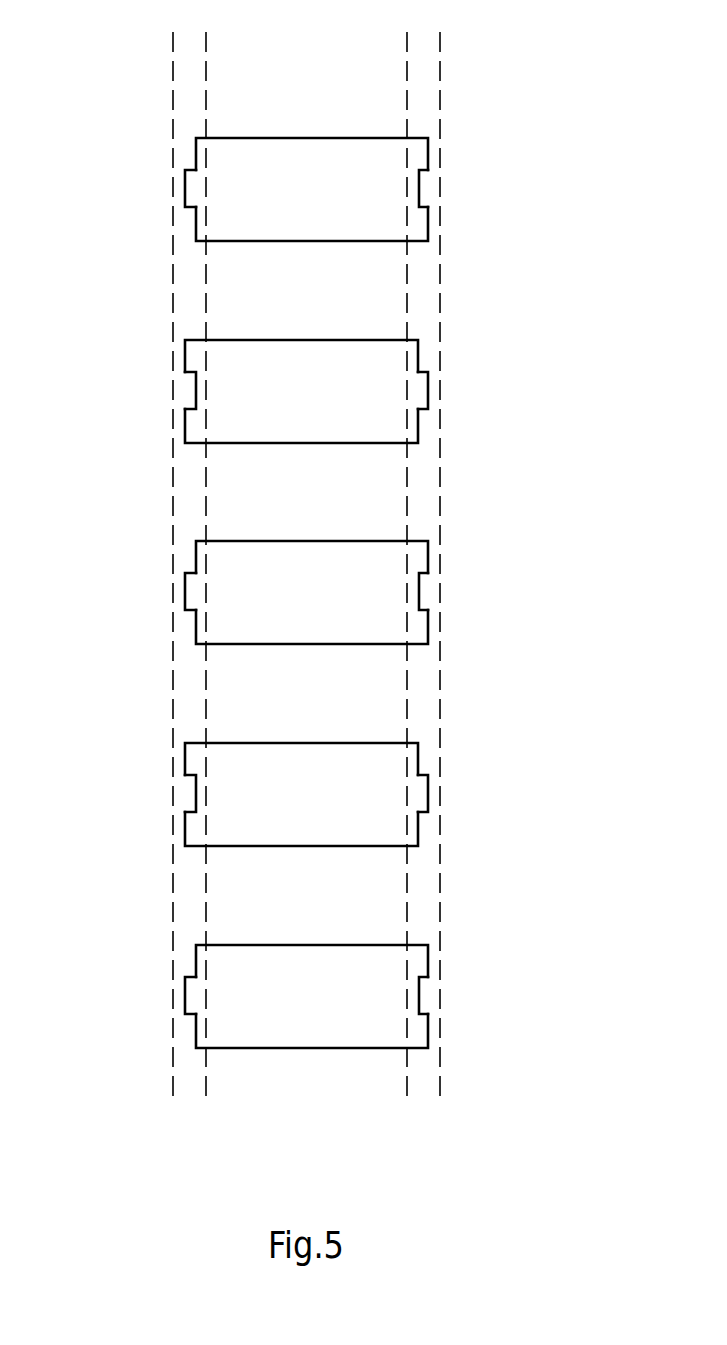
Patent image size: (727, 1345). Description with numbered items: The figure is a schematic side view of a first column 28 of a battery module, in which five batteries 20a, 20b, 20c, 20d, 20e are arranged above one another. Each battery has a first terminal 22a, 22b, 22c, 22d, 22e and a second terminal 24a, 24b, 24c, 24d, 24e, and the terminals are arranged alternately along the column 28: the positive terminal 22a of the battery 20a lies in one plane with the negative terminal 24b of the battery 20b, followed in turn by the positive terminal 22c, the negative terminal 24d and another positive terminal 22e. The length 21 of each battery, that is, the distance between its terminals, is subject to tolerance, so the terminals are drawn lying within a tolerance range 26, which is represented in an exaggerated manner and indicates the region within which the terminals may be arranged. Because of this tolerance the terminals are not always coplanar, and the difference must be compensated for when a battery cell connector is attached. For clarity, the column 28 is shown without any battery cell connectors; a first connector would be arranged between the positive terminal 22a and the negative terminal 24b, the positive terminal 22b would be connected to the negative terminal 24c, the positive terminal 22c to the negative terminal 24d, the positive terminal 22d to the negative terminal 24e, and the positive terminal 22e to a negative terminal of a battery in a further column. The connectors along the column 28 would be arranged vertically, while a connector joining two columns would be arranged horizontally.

The battery 20a is at (328, 202).
The battery 20b is at (328, 404).
The battery 20c is at (328, 605).
The battery 20d is at (328, 808).
The battery 20e is at (328, 1009).
The first terminal 22a is at (188, 189).
The first terminal 22b is at (422, 392).
The first terminal 22c is at (188, 592).
The first terminal 22d is at (422, 795).
The first terminal 22e is at (188, 996).
The second terminal 24a is at (422, 189).
The second terminal 24b is at (190, 392).
The second terminal 24c is at (422, 592).
The second terminal 24d is at (190, 795).
The second terminal 24e is at (422, 996).
The length 21 is at (427, 89).
The tolerance range 26 is at (253, 39).
The first column 28 is at (256, 1116).